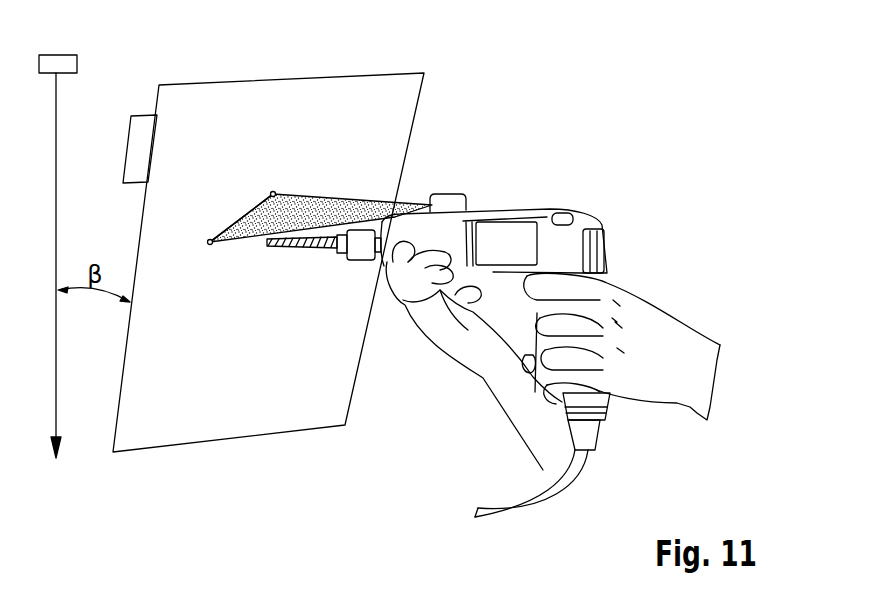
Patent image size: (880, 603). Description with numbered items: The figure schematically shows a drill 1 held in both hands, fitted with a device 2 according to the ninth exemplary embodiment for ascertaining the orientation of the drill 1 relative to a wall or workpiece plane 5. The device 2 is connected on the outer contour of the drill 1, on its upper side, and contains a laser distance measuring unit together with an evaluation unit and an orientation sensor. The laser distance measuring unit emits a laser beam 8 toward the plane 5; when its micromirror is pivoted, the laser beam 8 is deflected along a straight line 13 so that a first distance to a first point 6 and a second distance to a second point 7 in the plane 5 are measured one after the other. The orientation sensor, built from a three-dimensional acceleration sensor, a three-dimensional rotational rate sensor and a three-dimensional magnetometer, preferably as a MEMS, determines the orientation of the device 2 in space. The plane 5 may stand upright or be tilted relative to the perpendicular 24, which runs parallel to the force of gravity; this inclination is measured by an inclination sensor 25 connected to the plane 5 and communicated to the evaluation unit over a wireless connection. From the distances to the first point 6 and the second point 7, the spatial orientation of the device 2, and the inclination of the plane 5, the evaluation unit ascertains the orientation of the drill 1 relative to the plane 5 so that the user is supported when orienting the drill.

The drill 1 is at (600, 161).
The device 2 is at (455, 195).
The wall or workpiece plane 5 is at (253, 110).
The first point 6 is at (271, 192).
The second point 7 is at (207, 240).
The laser beam 8 is at (308, 205).
The straight line 13 is at (245, 213).
The perpendicular 24 is at (57, 358).
The inclination sensor 25 is at (143, 118).